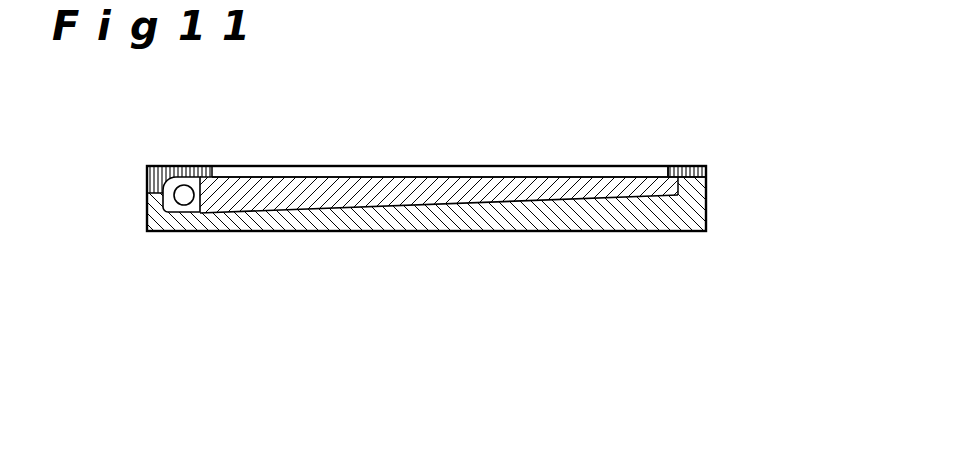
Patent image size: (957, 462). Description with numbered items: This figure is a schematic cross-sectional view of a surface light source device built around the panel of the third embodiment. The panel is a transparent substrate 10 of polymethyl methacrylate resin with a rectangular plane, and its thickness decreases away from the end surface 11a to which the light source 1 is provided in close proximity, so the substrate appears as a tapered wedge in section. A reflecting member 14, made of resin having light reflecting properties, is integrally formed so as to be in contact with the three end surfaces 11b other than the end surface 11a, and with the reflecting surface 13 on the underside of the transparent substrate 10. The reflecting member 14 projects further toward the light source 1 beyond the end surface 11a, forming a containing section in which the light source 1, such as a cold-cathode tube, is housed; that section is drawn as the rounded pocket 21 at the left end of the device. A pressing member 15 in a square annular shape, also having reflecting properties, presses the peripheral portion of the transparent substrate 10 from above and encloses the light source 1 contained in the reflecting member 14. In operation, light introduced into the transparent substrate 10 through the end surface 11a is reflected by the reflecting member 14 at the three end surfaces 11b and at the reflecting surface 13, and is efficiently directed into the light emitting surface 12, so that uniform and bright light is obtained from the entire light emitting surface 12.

The light source 1 is at (190, 199).
The transparent substrate 10 is at (365, 182).
The end surface 11a is at (203, 192).
The end surfaces 11b is at (705, 190).
The light emitting surface 12 is at (512, 175).
The reflecting surface 13 is at (424, 205).
The reflecting member 14 is at (594, 238).
The pressing member 15 is at (686, 162).
The fiber groove 21 is at (191, 212).